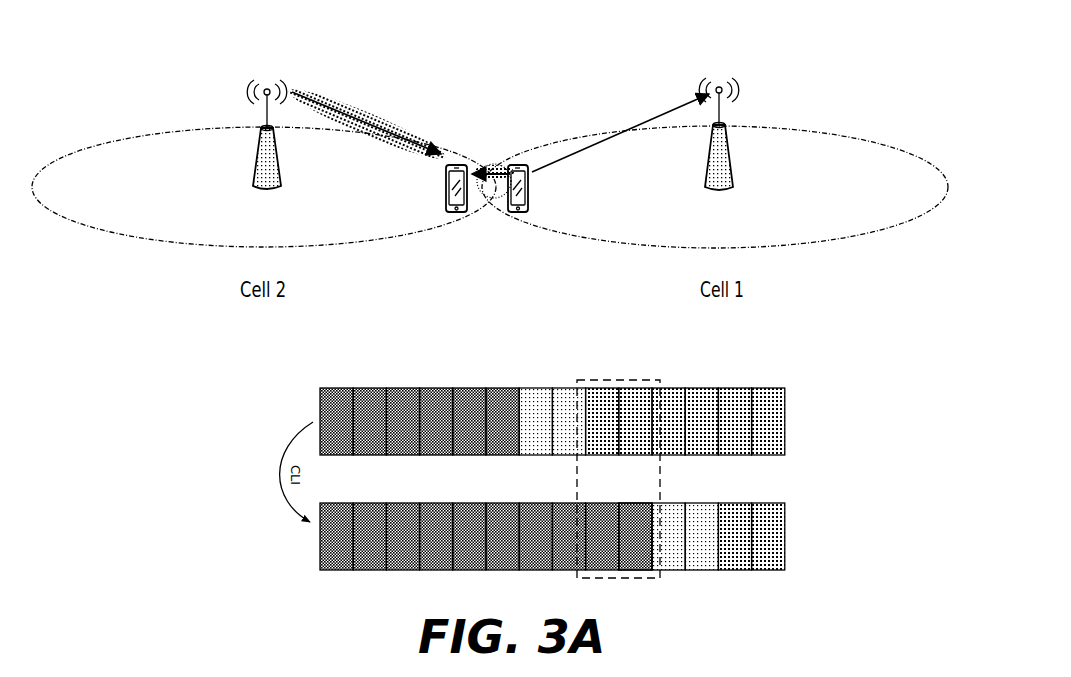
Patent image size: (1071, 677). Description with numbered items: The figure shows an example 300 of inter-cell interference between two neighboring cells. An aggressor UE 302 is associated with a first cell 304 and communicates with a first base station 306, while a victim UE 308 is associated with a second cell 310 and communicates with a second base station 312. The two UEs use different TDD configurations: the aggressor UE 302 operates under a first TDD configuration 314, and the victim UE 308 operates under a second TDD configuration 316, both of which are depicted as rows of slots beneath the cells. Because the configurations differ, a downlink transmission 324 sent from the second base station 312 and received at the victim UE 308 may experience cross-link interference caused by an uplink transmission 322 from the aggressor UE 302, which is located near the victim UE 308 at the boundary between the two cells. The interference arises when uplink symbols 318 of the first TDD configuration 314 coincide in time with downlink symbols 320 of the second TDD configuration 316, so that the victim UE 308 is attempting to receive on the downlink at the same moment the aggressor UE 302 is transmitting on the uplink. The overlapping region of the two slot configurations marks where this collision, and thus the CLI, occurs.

The example of inter-cell interference 300 is at (203, 32).
The aggressor UE 302 is at (529, 190).
The first cell 304 is at (876, 195).
The first base station 306 is at (731, 183).
The victim UE 308 is at (446, 184).
The second cell 310 is at (158, 203).
The second base station 312 is at (281, 170).
The first TDD configuration 314 is at (320, 400).
The second TDD configuration 316 is at (320, 530).
The uplink symbols 318 is at (640, 395).
The downlink symbols 320 is at (640, 562).
The uplink transmission 322 is at (490, 164).
The downlink transmission 324 is at (395, 122).